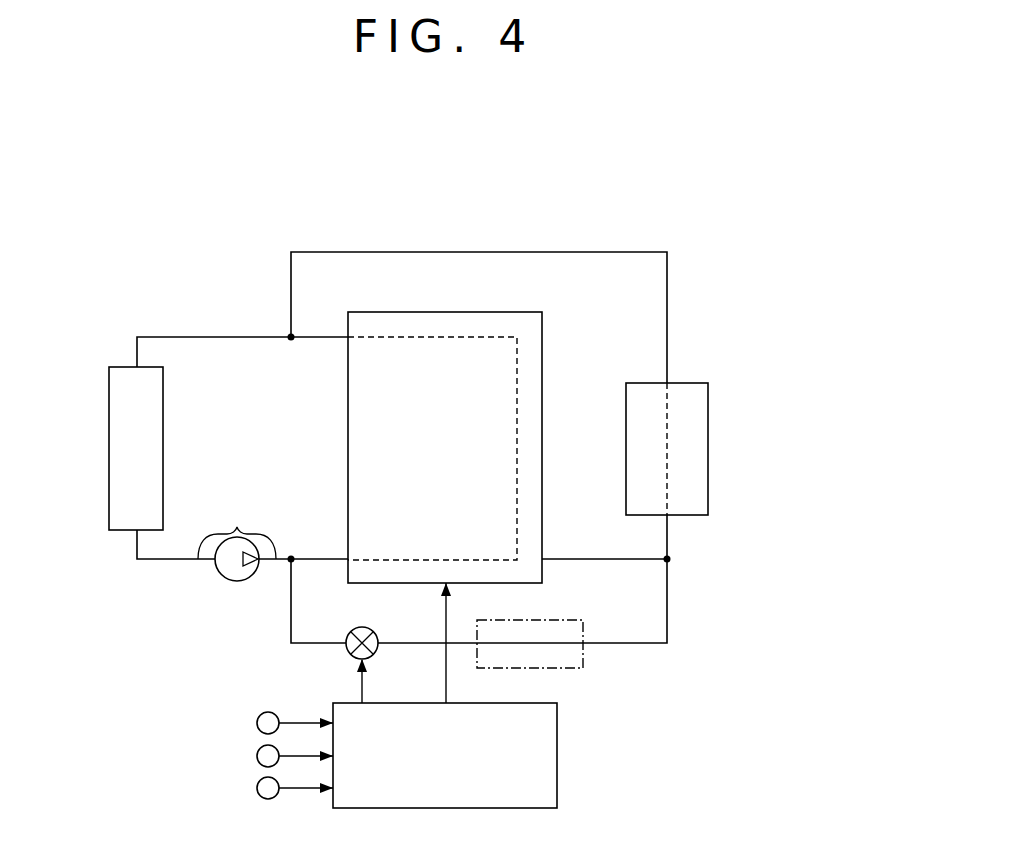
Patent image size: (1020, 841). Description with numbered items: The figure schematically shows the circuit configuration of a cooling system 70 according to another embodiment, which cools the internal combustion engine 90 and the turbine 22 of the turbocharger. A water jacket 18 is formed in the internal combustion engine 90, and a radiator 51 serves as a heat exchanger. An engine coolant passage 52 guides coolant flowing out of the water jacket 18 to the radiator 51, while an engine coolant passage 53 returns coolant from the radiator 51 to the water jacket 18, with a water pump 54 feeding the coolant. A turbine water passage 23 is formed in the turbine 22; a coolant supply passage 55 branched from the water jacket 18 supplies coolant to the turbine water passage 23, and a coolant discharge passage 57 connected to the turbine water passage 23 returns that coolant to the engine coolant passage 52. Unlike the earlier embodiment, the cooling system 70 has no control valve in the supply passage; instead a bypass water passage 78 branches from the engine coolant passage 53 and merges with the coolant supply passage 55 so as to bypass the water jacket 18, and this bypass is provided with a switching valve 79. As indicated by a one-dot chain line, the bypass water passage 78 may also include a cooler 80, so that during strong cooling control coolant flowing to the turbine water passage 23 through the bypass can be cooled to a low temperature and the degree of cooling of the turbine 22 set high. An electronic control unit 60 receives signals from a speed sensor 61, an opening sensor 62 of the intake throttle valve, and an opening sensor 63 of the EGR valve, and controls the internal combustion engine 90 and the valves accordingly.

The cooling system 70 is at (738, 252).
The coolant discharge passage 57 is at (482, 251).
The engine coolant passage 52 is at (217, 335).
The internal combustion engine 90 is at (392, 311).
The water jacket 18 is at (517, 402).
The radiator 51 is at (109, 446).
The turbine 22 is at (708, 403).
The turbine water passage 23 is at (667, 468).
The coolant supply passage 55 is at (667, 535).
The engine coolant passage 53 is at (242, 530).
The water pump 54 is at (237, 582).
The bypass water passage 78 is at (318, 646).
The switching valve 79 is at (351, 630).
The cooler 80 is at (537, 668).
The electronic control unit 60 is at (557, 757).
The speed sensor 61 is at (257, 723).
The opening sensor 62 is at (257, 756).
The opening sensor 63 is at (257, 788).